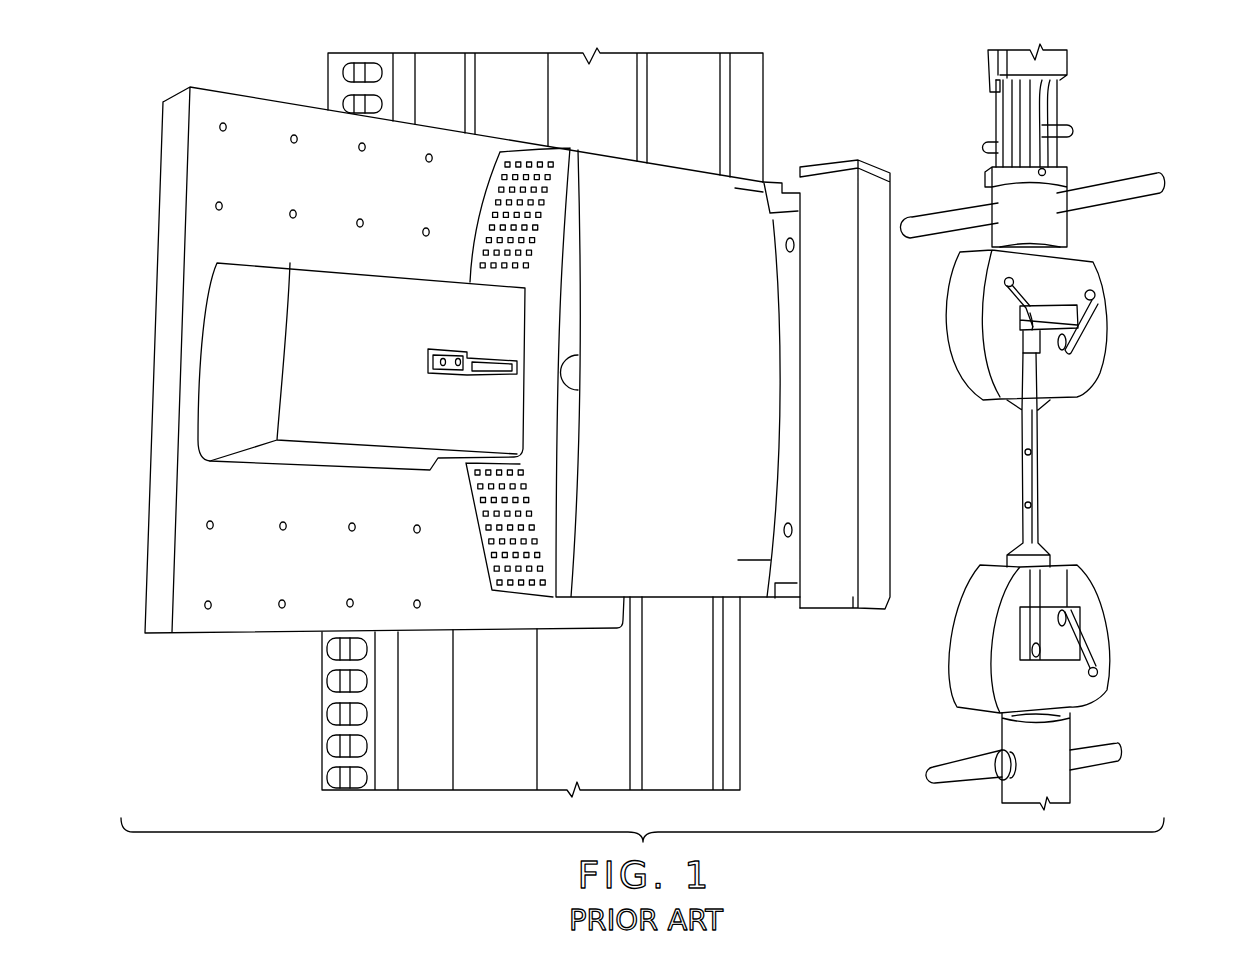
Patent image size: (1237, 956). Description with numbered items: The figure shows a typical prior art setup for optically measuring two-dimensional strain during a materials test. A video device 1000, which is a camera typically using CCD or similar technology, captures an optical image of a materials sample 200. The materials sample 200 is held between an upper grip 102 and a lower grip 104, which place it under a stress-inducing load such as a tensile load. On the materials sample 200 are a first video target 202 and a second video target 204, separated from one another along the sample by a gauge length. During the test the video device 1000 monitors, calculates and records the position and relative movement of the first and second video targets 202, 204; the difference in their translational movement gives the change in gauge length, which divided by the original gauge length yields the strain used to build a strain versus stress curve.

The video device 1000 is at (658, 369).
The grip 102 is at (1120, 328).
The grip 104 is at (1113, 645).
The materials sample 200 is at (1043, 470).
The first video target 202 is at (1033, 453).
The second video target 204 is at (1037, 505).